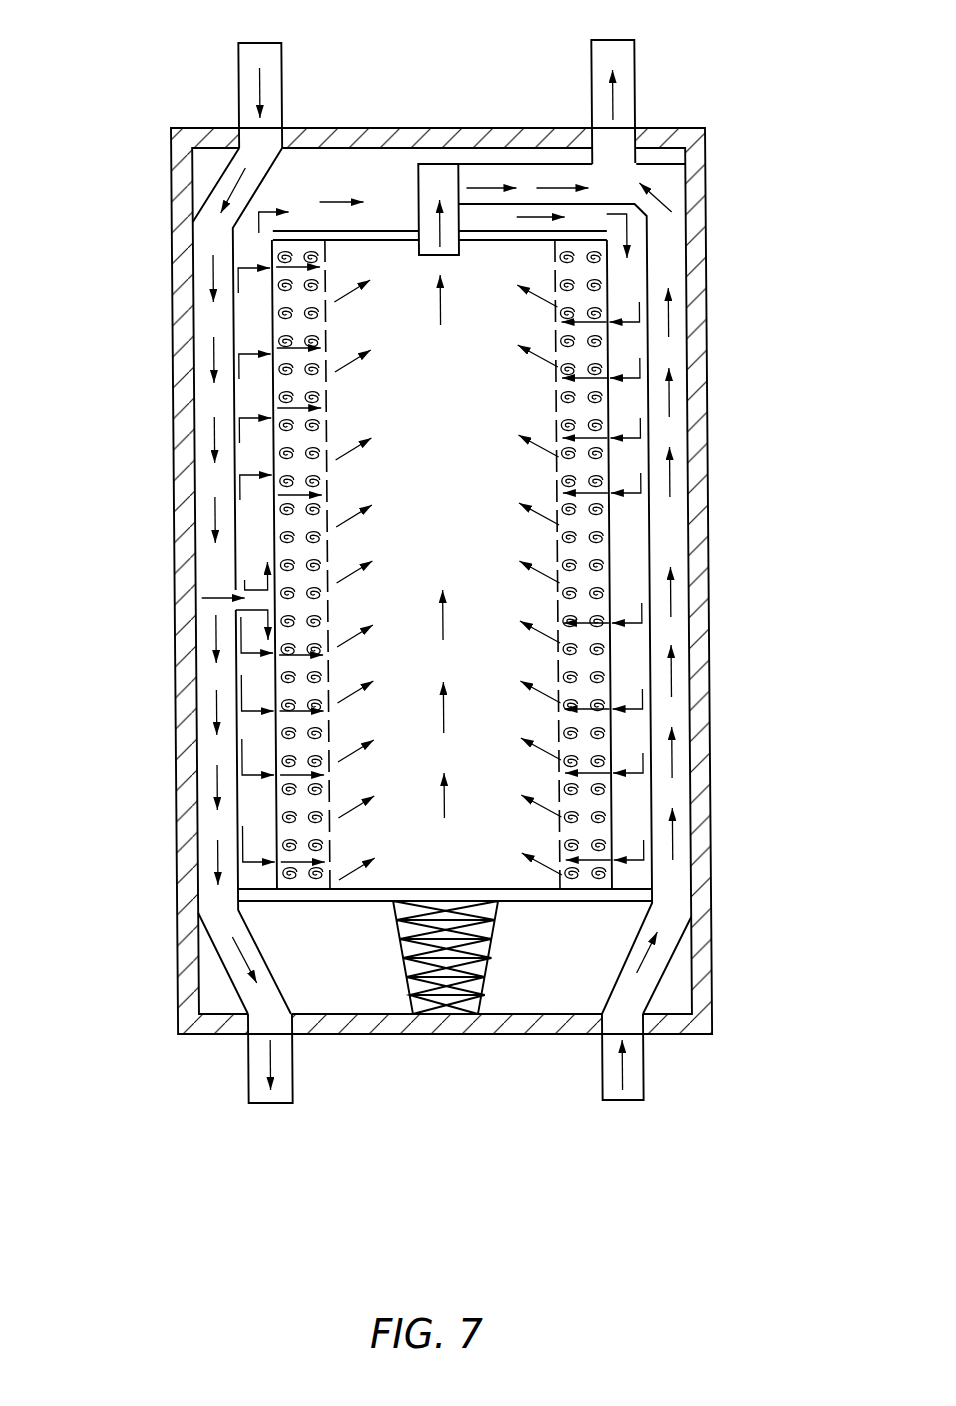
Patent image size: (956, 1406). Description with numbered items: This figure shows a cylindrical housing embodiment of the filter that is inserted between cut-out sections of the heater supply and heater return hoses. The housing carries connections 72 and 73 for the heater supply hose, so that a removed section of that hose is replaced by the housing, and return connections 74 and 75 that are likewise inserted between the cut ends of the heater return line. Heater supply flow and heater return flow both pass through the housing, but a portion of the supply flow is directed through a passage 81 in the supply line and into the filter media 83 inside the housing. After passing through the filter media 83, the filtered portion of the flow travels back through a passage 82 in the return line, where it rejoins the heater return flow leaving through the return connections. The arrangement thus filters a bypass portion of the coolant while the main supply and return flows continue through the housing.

The heater supply hose connection 72 is at (623, 1074).
The heater supply hose connection 73 is at (546, 86).
The heater return connection 74 is at (260, 78).
The heater return connection 75 is at (270, 1075).
The passage in the supply line 81 is at (234, 582).
The passage in the return line 82 is at (436, 173).
The filter media 83 is at (443, 546).